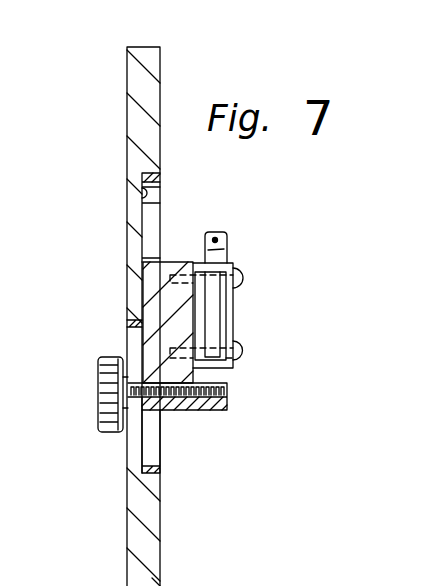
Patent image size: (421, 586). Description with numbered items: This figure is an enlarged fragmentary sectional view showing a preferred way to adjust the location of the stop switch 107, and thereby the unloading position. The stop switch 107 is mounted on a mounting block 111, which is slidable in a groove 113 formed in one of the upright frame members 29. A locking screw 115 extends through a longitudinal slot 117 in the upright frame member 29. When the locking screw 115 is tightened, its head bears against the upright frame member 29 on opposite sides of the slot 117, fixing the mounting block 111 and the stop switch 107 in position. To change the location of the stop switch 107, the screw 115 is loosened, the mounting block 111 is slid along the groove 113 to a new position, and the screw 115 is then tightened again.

The upright frame member 29 is at (127, 75).
The stop switch 107 is at (218, 333).
The mounting block 111 is at (163, 291).
The groove 113 is at (143, 186).
The locking screw 115 is at (117, 357).
The longitudinal slot 117 is at (137, 455).